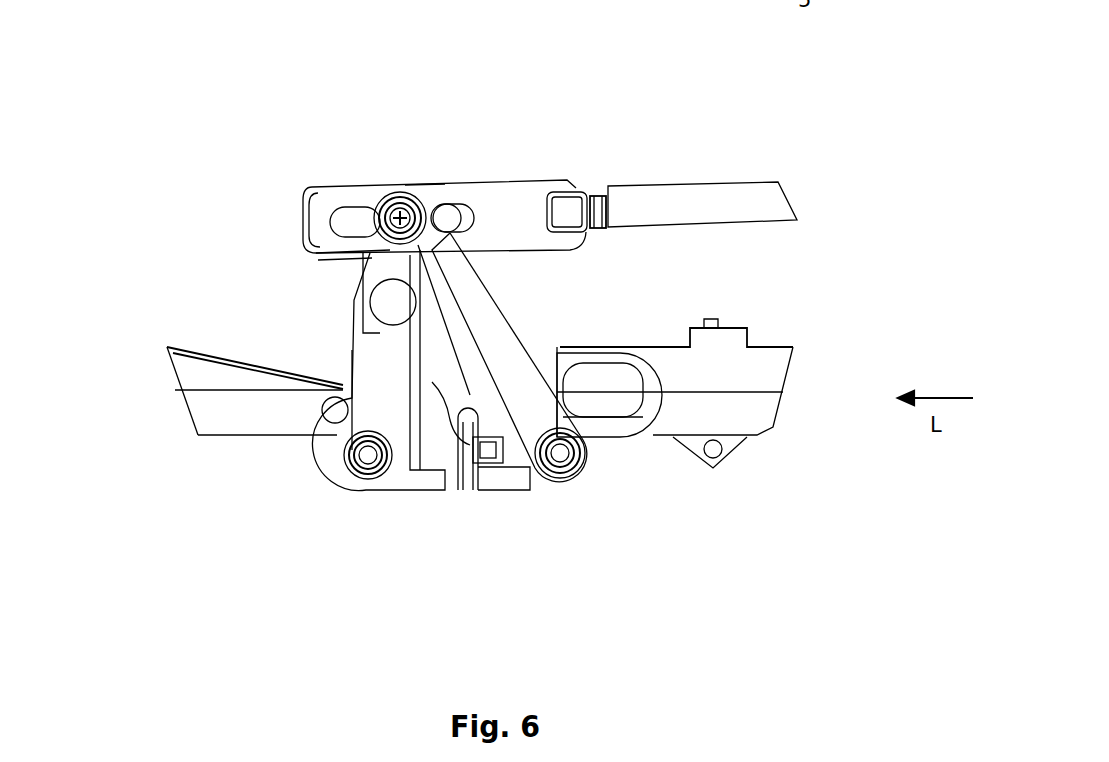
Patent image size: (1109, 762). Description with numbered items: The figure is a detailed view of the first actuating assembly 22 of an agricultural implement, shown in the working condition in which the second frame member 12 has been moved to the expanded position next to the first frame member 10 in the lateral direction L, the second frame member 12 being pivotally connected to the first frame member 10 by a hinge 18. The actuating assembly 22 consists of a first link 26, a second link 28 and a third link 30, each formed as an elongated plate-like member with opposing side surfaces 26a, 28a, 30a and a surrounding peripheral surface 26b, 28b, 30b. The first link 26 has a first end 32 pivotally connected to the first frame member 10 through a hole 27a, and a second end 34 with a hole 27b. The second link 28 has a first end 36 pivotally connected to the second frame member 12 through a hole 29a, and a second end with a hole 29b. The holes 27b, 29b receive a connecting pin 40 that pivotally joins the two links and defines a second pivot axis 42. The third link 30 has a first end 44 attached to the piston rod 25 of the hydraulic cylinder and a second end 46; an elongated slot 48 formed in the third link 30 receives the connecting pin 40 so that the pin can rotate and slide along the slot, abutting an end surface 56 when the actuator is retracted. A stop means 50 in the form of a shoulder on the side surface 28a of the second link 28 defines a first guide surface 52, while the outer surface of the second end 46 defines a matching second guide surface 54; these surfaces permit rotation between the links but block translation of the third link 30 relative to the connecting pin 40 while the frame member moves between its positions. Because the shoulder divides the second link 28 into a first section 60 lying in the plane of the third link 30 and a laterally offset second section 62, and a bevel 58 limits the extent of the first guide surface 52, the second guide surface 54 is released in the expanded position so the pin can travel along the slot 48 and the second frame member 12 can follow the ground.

The first frame member 10 is at (758, 413).
The second frame member 12 is at (213, 415).
The hinge 18 is at (463, 516).
The first actuating assembly 22 is at (263, 114).
The piston rod 25 is at (770, 197).
The first link 26 is at (688, 357).
The side surface of the first link 26a is at (470, 287).
The peripheral surface of the first link 26b is at (510, 318).
The hole at the first end of the first link 27a is at (580, 472).
The hole at the second end of the first link 27b is at (366, 114).
The second link 28 is at (272, 370).
The side surface of the second link 28a is at (360, 392).
The peripheral surface of the second link 28b is at (343, 389).
The hole at the first end of the second link 29a is at (365, 477).
The hole at the second end of the second link 29b is at (392, 198).
The third link 30 is at (467, 145).
The side surface of the third link 30a is at (533, 195).
The peripheral surface of the third link 30b is at (510, 178).
The first end of the first link 32 is at (568, 485).
The second end of the first link 34 is at (423, 187).
The first end of the second link 36 is at (342, 472).
The connecting pin 40 is at (400, 190).
The second pivot axis 42 is at (400, 217).
The first end of the third link 44 is at (577, 182).
The second end of the third link 46 is at (302, 210).
The elongated slot 48 is at (455, 217).
The stop means 50 is at (281, 294).
The first guide surface 52 is at (410, 263).
The second guide surface 54 is at (304, 210).
The end surface of the slot 56 is at (332, 213).
The bevel 58 is at (360, 255).
The first section of the second link 60 is at (380, 400).
The second section of the second link 62 is at (357, 251).